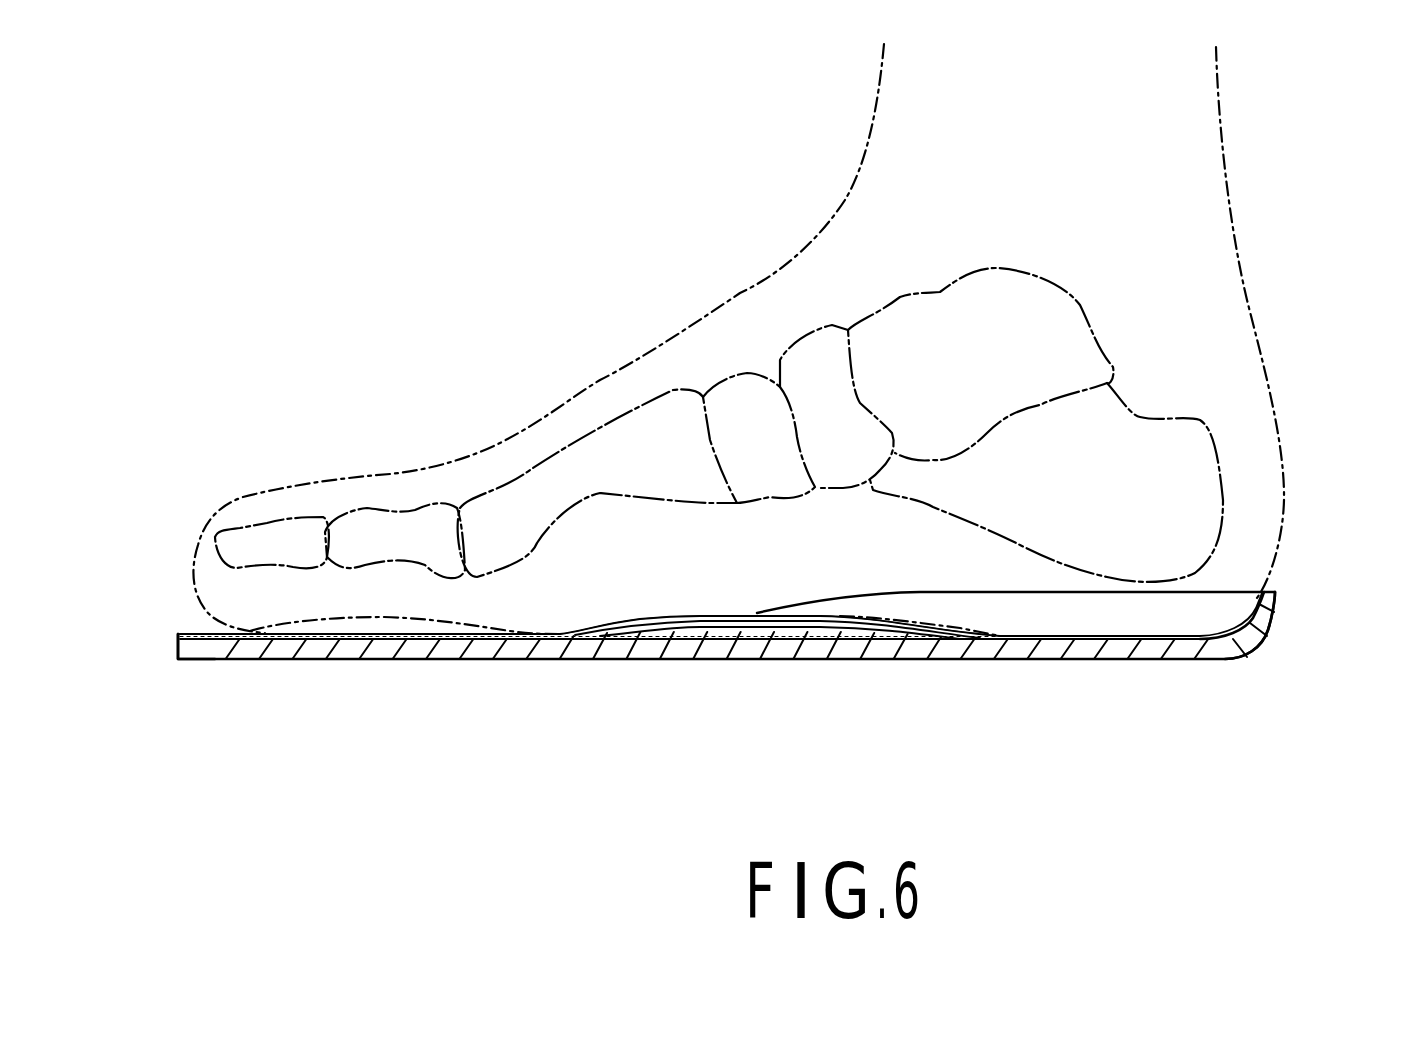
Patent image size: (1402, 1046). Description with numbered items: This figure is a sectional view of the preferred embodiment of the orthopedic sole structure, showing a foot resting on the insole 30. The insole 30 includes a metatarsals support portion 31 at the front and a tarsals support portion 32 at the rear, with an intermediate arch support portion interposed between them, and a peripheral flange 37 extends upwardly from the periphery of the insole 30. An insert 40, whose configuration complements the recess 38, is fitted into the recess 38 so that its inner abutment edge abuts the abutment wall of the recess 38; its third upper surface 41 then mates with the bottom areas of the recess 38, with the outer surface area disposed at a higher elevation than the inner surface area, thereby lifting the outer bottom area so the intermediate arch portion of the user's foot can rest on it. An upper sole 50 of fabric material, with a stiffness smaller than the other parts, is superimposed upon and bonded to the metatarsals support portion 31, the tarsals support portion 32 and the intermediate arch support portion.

The insole 30 is at (1095, 680).
The metatarsals support portion 31 is at (200, 660).
The tarsals support portion 32 is at (1258, 642).
The peripheral flange 37 is at (1215, 598).
The recess 38 is at (780, 626).
The insert 40 is at (794, 710).
The third upper surface 41 is at (810, 660).
The upper sole 50 is at (183, 612).